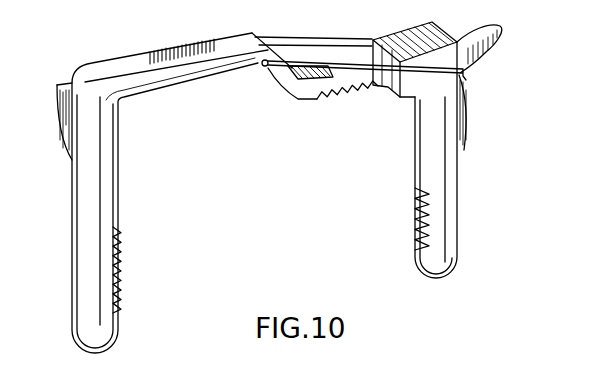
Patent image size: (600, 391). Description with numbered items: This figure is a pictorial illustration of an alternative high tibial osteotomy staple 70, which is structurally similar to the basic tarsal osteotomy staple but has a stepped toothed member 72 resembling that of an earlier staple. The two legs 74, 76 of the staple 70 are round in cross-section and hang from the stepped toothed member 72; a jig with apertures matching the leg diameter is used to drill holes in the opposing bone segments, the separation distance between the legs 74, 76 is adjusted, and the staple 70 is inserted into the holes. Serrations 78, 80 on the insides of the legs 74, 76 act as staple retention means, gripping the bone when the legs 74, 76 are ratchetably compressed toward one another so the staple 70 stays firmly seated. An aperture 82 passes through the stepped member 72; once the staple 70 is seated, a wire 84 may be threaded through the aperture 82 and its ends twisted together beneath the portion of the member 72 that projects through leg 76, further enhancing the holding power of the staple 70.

The high tibial osteotomy staple 70 is at (332, 156).
The stepped toothed member 72 is at (332, 72).
The leg 74 is at (88, 207).
The leg 76 is at (450, 237).
The serrations 78 is at (122, 282).
The serrations 80 is at (413, 223).
The aperture 82 is at (263, 67).
The wire 84 is at (330, 82).